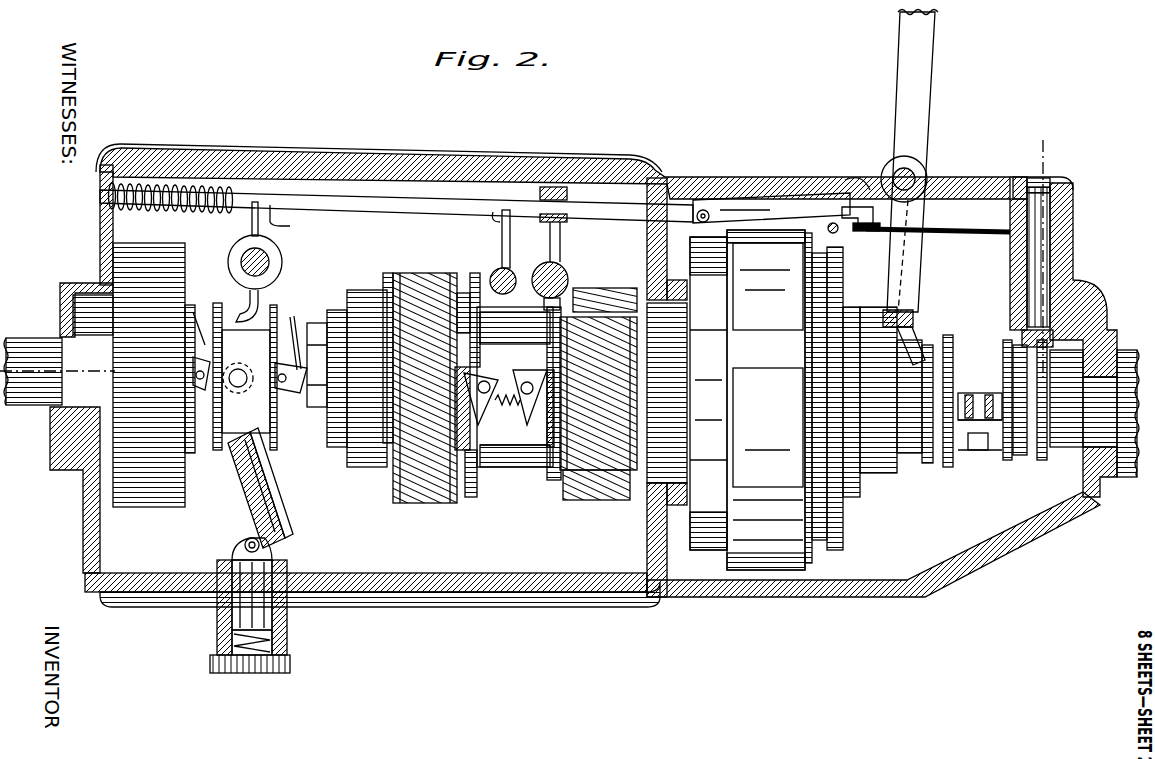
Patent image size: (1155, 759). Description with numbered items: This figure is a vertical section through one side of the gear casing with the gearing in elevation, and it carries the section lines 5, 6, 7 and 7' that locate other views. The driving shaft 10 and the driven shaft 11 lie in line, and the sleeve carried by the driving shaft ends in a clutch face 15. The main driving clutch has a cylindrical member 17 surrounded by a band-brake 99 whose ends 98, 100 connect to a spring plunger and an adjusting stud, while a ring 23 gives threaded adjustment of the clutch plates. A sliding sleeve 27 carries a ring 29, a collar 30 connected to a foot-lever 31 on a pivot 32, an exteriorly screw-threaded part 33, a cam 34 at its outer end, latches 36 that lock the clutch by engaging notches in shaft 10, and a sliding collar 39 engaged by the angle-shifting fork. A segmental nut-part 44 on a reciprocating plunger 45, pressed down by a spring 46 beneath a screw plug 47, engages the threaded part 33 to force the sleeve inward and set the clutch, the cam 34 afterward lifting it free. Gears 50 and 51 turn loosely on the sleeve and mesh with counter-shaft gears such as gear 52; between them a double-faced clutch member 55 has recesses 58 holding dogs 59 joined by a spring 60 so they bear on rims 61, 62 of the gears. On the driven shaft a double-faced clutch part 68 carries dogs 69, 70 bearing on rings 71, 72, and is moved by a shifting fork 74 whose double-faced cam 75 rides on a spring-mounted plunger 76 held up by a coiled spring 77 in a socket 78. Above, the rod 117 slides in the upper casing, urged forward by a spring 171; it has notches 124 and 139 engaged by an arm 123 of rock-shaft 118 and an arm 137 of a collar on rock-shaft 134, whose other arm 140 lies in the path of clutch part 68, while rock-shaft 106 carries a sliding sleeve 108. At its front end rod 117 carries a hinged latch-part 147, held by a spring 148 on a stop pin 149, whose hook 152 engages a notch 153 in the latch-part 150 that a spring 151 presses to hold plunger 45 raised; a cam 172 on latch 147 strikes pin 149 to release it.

The section line 5- 5 is at (255, 730).
The section line 6- 6 is at (567, 660).
The section line 7- 7 is at (895, 318).
The section line 7'- 7' is at (1070, 259).
The driving shaft 10 is at (1067, 374).
The driven shaft 11 is at (40, 346).
The clutch face 15 is at (332, 323).
The cylindrical member 17 is at (700, 580).
The ring 23 is at (840, 550).
The sliding sleeve 27 is at (914, 345).
The ring 29 is at (848, 512).
The collar 30 is at (882, 455).
The foot-lever 31 is at (926, 104).
The pivot 32 is at (915, 175).
The screw-threaded part 33 is at (1006, 462).
The cam 34 is at (1040, 462).
The latches 36 is at (978, 421).
The collar 39 is at (948, 468).
The segmental nut-part 44 is at (1020, 338).
The reciprocating plunger 45 is at (1038, 276).
The spring 46 is at (1045, 185).
The screw plug 47 is at (1022, 185).
The gear 50 is at (603, 458).
The gear 51 is at (418, 512).
The complementary gear 52 is at (617, 288).
The double-faced clutch member 55 is at (527, 447).
The recesses 58 is at (493, 430).
The dogs 59 is at (485, 378).
The coiled spring 60 is at (496, 413).
The rim 61 is at (553, 470).
The rim 62 is at (468, 500).
The double-faced clutch part 68 is at (258, 340).
The pivoted dog 69 is at (325, 365).
The pivoted dog 70 is at (113, 369).
The ring 71 is at (326, 450).
The ring 72 is at (218, 455).
The shifting fork 74 is at (243, 470).
The double-faced cam 75 is at (278, 508).
The spring mounted plunger 76 is at (232, 550).
The coiled spring 77 is at (288, 662).
The socket 78 is at (290, 648).
The end of band-brake 98 is at (786, 380).
The band-brake 99 is at (770, 565).
The end of band-brake 100 is at (745, 330).
The rock-shaft 106 is at (576, 284).
The sliding sleeve 108 is at (566, 272).
The sliding rod 117 is at (443, 203).
The rock-shaft 118 is at (500, 275).
The arm 123 is at (552, 258).
The notch 124 is at (490, 220).
The rock-shaft 134 is at (268, 260).
The arm 137 is at (247, 232).
The notch 139 is at (275, 215).
The arm 140 is at (245, 303).
The latch-part 147 is at (755, 196).
The spring 148 is at (705, 208).
The stop pin 149 is at (840, 235).
The latch-part 150 is at (938, 243).
The spring 151 is at (1010, 272).
The hook 152 is at (860, 200).
The notch 153 is at (867, 180).
The spring 171 is at (152, 185).
The cam 172 is at (752, 212).